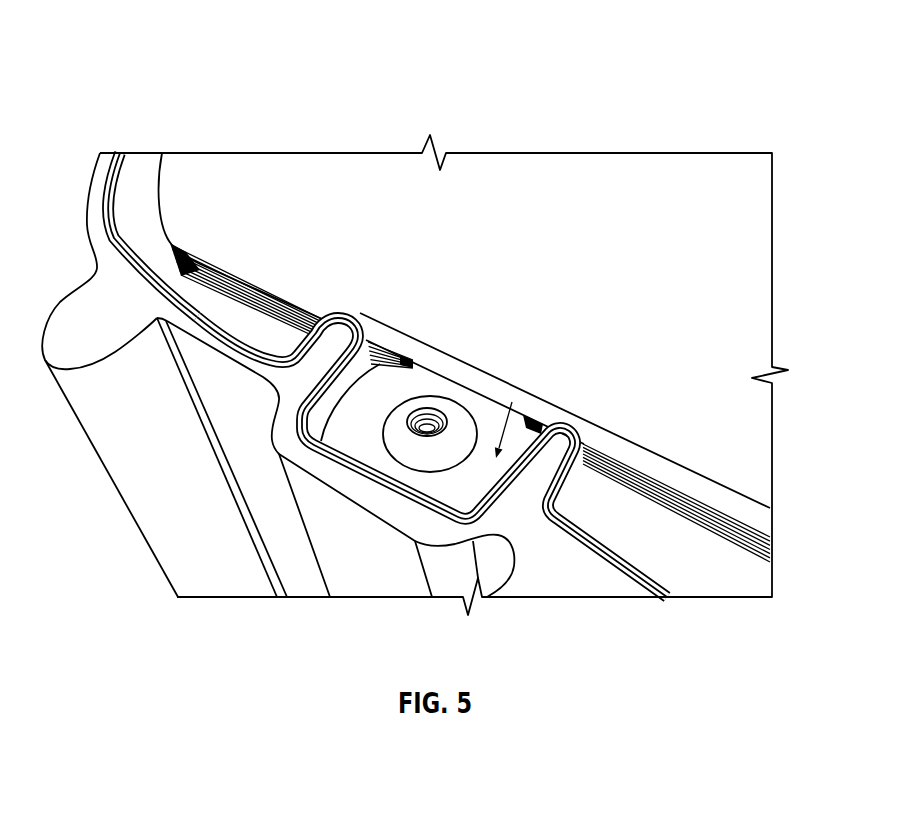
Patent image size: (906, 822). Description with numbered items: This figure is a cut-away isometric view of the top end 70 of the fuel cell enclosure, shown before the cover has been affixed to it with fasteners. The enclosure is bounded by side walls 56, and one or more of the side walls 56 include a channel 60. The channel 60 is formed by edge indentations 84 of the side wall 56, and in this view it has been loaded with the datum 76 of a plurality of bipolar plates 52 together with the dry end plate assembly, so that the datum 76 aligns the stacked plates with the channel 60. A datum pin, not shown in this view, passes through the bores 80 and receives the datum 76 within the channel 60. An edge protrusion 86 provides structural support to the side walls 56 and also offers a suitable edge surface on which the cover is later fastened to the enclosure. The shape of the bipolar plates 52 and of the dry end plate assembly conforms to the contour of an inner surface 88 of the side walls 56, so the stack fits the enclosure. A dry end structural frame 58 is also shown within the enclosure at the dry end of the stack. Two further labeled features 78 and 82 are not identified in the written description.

The bipolar plates 52 is at (716, 514).
The side walls 56 is at (228, 416).
The dry end structural frame 58 is at (676, 237).
The channel 60 is at (528, 418).
The top end 70 is at (165, 43).
The datum 76 is at (381, 387).
The boss 78 is at (462, 417).
The bores 80 is at (426, 418).
The gap 82 is at (507, 412).
The edge indentations 84 is at (323, 346).
The edge protrusion 86 is at (72, 312).
The inner surface 88 is at (127, 158).